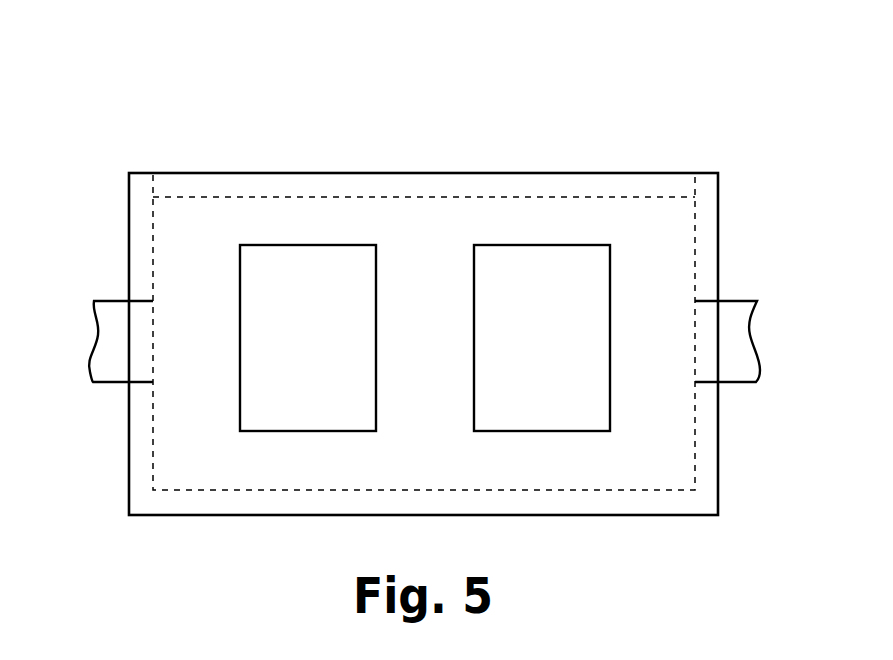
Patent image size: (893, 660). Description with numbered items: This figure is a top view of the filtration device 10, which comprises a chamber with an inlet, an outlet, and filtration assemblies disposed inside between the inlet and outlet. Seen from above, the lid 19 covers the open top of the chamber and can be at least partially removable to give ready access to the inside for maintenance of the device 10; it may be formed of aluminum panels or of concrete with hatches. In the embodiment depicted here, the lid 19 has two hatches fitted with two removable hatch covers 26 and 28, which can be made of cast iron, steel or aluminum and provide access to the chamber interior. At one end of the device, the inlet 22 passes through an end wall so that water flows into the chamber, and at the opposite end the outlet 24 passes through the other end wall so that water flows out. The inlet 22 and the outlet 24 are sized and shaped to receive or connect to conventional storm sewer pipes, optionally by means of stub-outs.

The filtration device 10 is at (708, 142).
The lid 19 is at (683, 266).
The inlet 22 is at (96, 320).
The outlet 24 is at (756, 335).
The removable hatch cover 26 is at (366, 298).
The removable hatch cover 28 is at (600, 300).